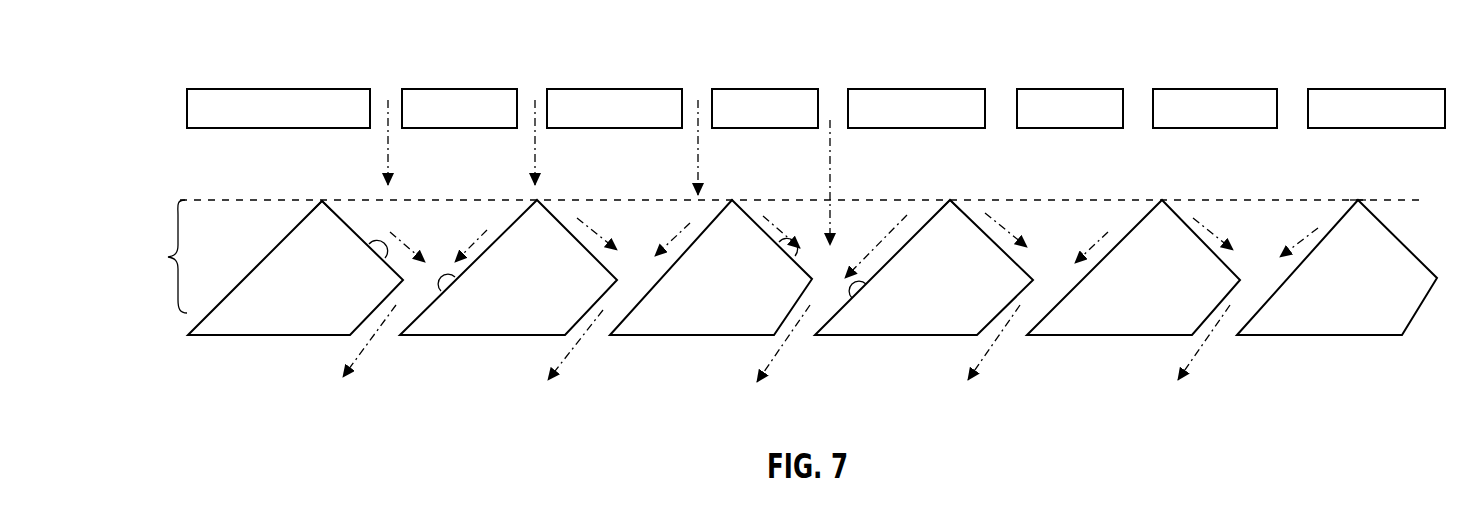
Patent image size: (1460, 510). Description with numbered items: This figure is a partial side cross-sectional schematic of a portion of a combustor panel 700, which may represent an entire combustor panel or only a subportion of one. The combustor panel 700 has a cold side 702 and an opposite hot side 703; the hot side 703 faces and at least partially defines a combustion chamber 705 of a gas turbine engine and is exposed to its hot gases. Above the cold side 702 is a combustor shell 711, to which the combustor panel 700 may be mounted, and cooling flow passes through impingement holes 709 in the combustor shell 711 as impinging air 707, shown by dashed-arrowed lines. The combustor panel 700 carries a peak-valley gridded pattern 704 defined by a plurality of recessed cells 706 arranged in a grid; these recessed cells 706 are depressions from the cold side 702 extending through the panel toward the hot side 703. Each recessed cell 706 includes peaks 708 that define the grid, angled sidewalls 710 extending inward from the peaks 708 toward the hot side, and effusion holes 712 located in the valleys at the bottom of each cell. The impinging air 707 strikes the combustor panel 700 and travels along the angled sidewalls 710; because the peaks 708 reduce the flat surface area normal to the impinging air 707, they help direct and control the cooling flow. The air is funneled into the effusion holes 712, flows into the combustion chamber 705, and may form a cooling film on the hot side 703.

The combustor panel 700 is at (1352, 322).
The cold side 702 is at (1352, 197).
The hot side 703 is at (1082, 338).
The peak-valley gridded pattern 704 is at (166, 259).
The combustion chamber 705 is at (883, 404).
The recessed cells 706 is at (432, 232).
The impinging air 707 is at (534, 105).
The peaks 708 is at (322, 200).
The impingement holes 709 is at (698, 95).
The angled sidewalls 710 is at (375, 250).
The combustor shell 711 is at (1380, 106).
The effusion holes 712 is at (593, 342).